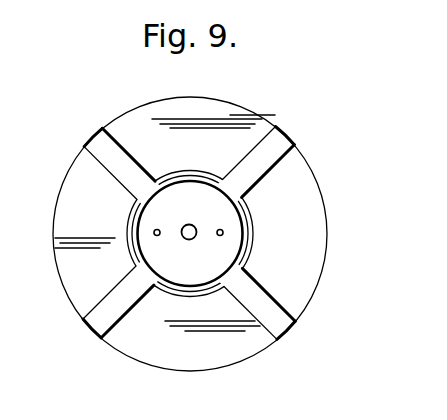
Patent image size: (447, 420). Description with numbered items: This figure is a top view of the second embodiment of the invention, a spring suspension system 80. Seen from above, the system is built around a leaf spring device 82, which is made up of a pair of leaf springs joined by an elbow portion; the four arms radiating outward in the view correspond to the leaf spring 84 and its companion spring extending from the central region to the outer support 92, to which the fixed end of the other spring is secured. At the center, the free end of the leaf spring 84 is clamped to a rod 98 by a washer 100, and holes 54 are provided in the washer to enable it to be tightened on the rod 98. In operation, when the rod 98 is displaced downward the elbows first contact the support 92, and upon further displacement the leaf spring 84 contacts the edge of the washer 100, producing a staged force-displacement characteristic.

The spring suspension system 80 is at (89, 347).
The leaf spring device 82 is at (136, 146).
The leaf spring 84 is at (115, 167).
The support 92 is at (258, 118).
The washer 100 is at (197, 183).
The rod 98 is at (183, 235).
The holes 54 is at (224, 232).